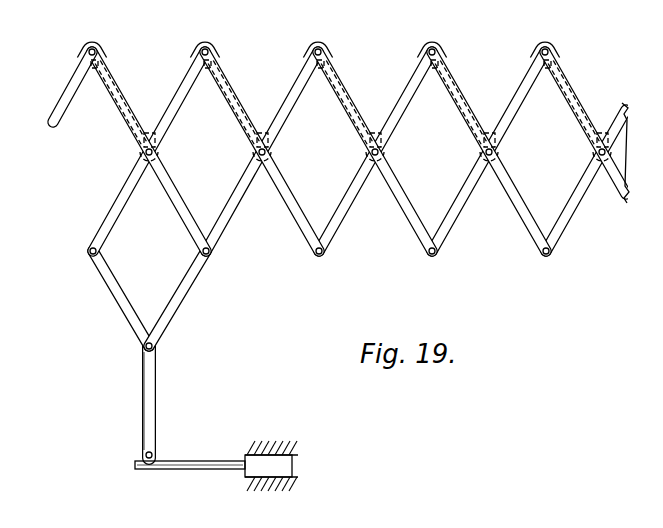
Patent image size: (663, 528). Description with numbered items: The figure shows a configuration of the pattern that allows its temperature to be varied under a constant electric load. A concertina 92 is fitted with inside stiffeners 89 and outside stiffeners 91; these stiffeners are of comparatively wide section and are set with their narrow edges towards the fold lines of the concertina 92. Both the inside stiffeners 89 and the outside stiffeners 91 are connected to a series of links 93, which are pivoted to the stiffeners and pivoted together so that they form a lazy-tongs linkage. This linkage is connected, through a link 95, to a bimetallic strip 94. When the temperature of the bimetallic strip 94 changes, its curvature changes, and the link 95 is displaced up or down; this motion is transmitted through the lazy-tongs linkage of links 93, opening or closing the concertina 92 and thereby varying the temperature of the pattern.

The inside stiffeners 89 is at (91, 63).
The outside stiffeners 91 is at (254, 140).
The concertina 92 is at (67, 93).
The links 93 is at (224, 220).
The bimetallic strip 94 is at (208, 469).
The link 95 is at (152, 410).